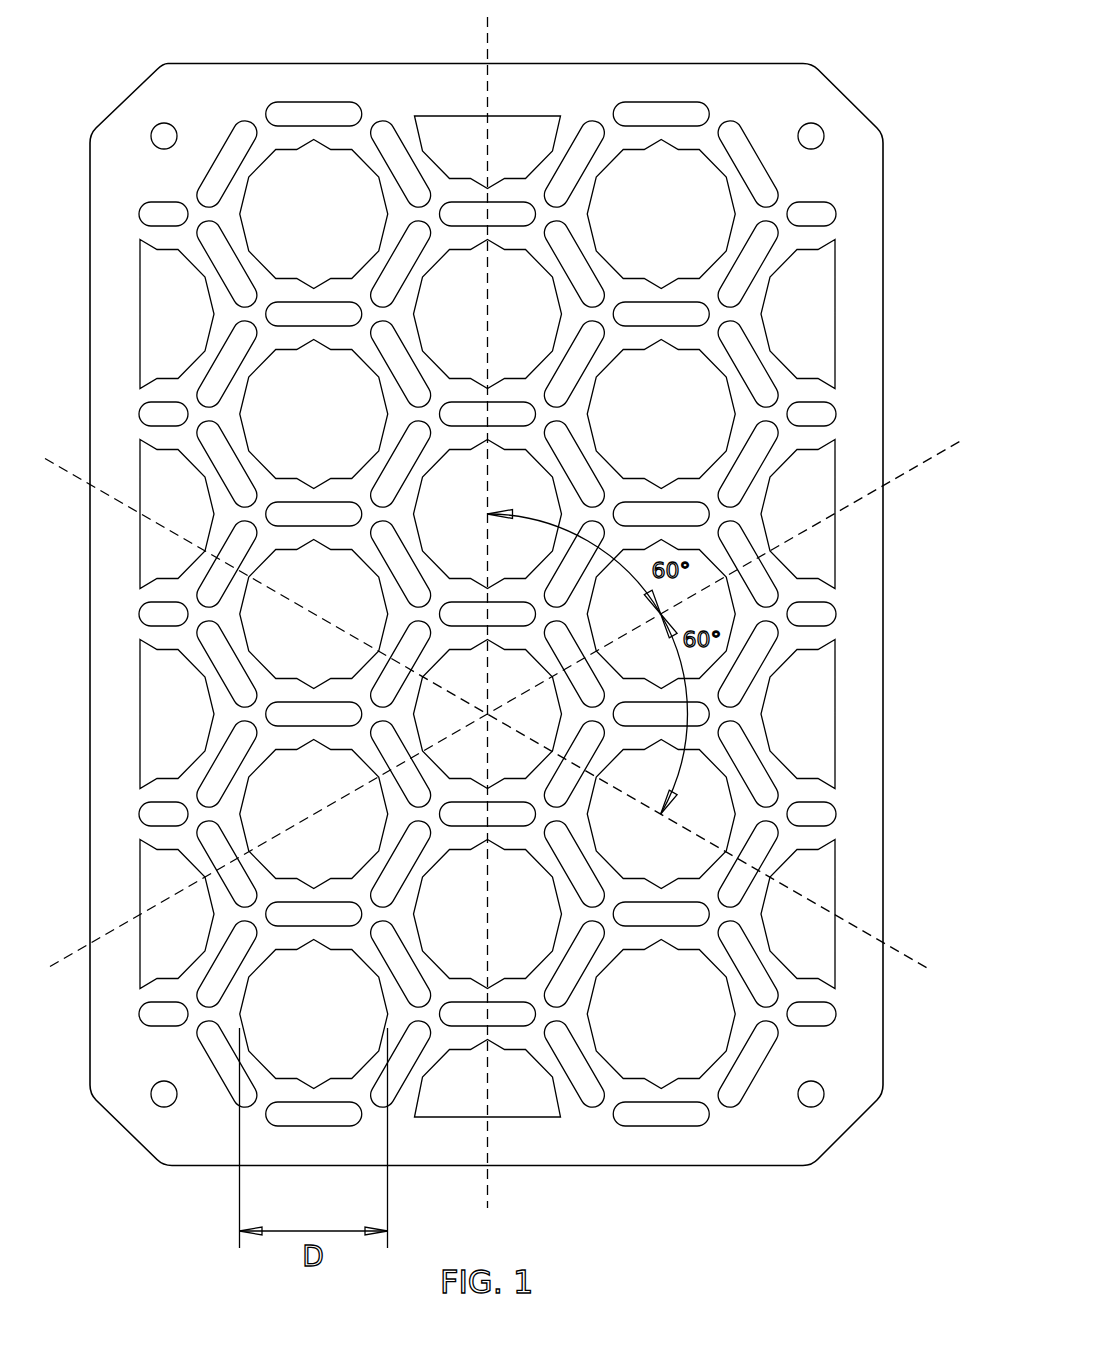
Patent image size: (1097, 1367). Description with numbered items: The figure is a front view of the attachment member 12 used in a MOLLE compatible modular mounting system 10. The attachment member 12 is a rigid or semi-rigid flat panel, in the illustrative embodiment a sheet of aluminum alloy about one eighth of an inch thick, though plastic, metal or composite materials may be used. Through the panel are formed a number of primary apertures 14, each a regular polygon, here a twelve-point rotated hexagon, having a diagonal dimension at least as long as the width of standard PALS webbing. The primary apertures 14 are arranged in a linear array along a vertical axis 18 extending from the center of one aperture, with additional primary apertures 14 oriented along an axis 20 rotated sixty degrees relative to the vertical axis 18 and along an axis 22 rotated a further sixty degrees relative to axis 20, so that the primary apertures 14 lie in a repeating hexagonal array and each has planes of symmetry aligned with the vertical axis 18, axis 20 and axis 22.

The modular mounting system 10 is at (514, 584).
The attachment member 12 is at (866, 290).
The primary apertures 14 is at (298, 232).
The vertical axis 18 is at (488, 42).
The axis 20 is at (921, 465).
The axis 22 is at (903, 948).